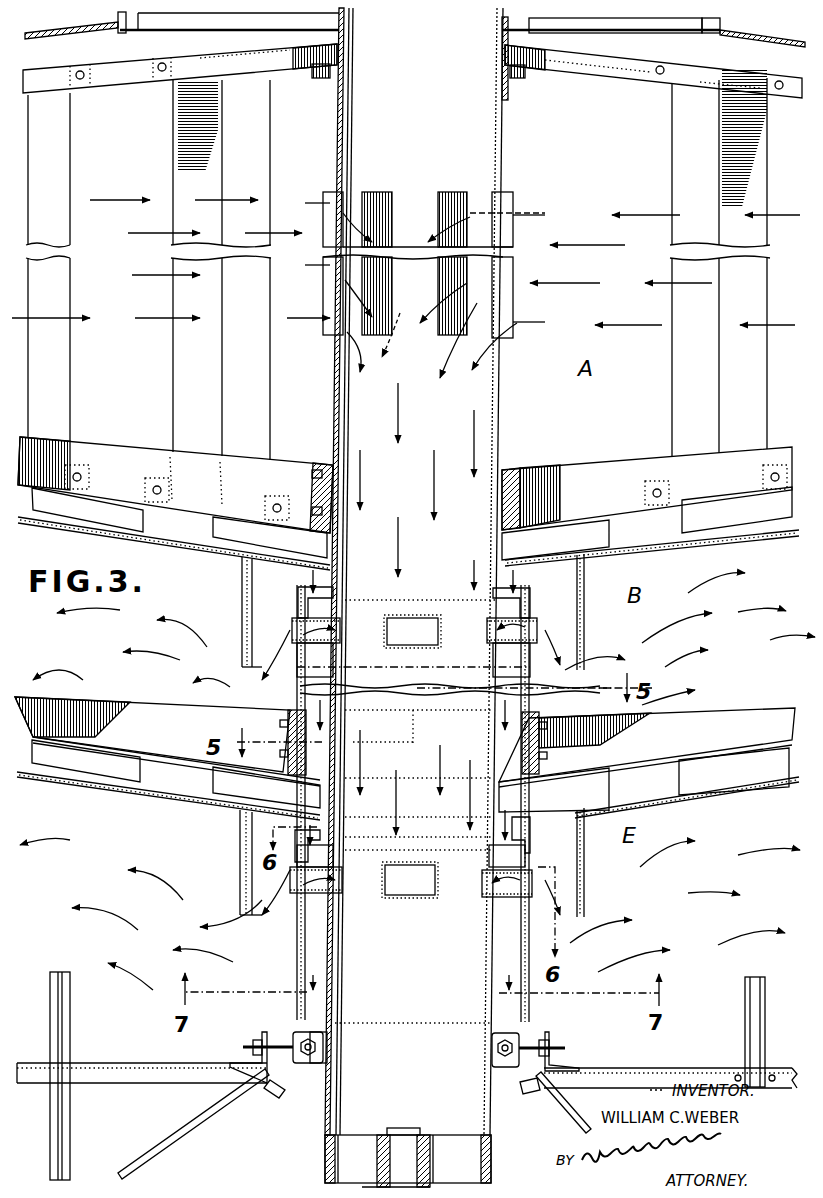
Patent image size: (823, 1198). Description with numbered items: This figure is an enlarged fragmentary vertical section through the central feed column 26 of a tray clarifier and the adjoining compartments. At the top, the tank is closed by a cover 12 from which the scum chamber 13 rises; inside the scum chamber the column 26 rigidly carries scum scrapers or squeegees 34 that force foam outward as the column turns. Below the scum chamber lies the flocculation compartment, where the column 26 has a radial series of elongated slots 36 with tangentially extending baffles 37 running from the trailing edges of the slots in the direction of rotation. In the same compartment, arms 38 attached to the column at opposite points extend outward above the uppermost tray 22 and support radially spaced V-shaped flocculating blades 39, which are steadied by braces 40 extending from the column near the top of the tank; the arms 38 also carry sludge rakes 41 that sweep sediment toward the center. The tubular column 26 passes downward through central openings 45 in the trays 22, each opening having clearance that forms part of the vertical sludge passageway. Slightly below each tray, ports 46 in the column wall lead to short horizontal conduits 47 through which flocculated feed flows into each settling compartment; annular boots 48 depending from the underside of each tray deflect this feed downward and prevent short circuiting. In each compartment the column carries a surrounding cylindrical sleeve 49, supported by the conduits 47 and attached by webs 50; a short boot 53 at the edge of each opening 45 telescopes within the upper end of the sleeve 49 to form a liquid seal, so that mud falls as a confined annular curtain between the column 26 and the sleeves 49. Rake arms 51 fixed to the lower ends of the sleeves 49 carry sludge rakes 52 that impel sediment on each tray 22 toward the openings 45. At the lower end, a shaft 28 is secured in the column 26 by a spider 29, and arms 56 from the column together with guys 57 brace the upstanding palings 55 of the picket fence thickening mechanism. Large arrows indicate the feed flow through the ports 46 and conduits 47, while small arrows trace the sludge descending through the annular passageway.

The cover 12 is at (60, 36).
The scum chamber 13 is at (114, 30).
The scum scrapers or squeegees 34 is at (156, 23).
The feed column 26 is at (455, 571).
The braces 40 is at (611, 72).
The tangentially extending baffles 37 is at (372, 191).
The elongated slots 36 is at (400, 188).
The flocculating blades or paddles 39 is at (182, 360).
The arms 38 is at (112, 450).
The sludge scrapers or rakes 41 is at (678, 529).
The central openings 45 is at (507, 568).
The trays or partitions 22 is at (765, 533).
The annular boots or baffles 48 is at (240, 572).
The cylindrical sleeve or section 49 is at (298, 679).
The baffle or boot 53 is at (522, 577).
The horizontal conduit 47 is at (530, 618).
The ports 46 is at (540, 643).
The rake arms 51 is at (115, 710).
The webs 50 is at (300, 722).
The sludge rakes or scrapers 52 is at (115, 767).
The arms 56 is at (132, 1062).
The palings or stirrers 55 is at (65, 1037).
The guys 57 is at (190, 1130).
The spider 29 is at (450, 1135).
The shaft 28 is at (405, 1125).